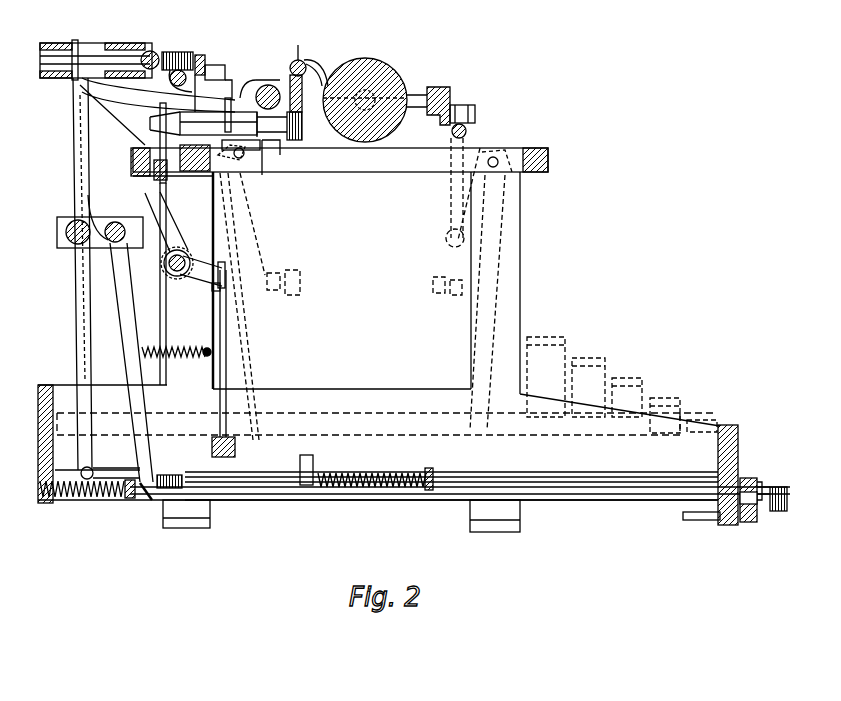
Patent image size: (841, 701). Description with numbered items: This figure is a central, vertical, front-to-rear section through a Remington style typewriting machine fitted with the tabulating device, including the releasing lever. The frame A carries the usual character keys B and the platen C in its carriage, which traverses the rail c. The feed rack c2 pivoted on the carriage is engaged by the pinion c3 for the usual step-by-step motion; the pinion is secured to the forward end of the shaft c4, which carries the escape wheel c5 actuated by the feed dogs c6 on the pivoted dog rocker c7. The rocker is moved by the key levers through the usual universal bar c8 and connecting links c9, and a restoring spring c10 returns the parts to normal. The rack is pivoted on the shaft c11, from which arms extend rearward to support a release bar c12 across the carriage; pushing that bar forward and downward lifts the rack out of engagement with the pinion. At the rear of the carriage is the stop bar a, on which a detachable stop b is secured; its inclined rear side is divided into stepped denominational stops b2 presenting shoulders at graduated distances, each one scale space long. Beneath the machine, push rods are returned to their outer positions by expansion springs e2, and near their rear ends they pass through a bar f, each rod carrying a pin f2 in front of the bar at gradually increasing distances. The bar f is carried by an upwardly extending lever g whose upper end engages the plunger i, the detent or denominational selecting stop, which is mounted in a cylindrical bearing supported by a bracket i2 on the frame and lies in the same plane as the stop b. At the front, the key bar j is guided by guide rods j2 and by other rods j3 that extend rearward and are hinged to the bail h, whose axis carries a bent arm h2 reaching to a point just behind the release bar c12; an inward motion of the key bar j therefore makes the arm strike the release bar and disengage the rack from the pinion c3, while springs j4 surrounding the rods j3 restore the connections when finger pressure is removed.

The frame A is at (521, 322).
The character keys B is at (622, 385).
The platen C is at (365, 87).
The stop bar a is at (214, 65).
The stop b is at (197, 55).
The denominational stops b2 is at (172, 52).
The rail c is at (262, 150).
The feed rack c2 is at (306, 93).
The pinion c3 is at (236, 126).
The shaft c4 is at (278, 140).
The escape wheel c5 is at (150, 145).
The feed dogs c6 is at (152, 172).
The dog rocker c7 is at (170, 228).
The universal bar c8 is at (236, 445).
The connecting links c9 is at (232, 355).
The restoring spring c10 is at (167, 275).
The shaft c11 is at (312, 58).
The release bar c12 is at (290, 62).
The expansion springs e2 is at (78, 498).
The bar f is at (136, 498).
The pin f2 is at (170, 460).
The lever g is at (112, 248).
The bail h is at (76, 352).
The bent arm h2 is at (73, 160).
The plunger i is at (40, 60).
The bracket i2 is at (150, 122).
The bar j is at (746, 520).
The guide rods j2 is at (701, 531).
The rods j3 is at (648, 485).
The springs j4 is at (373, 490).